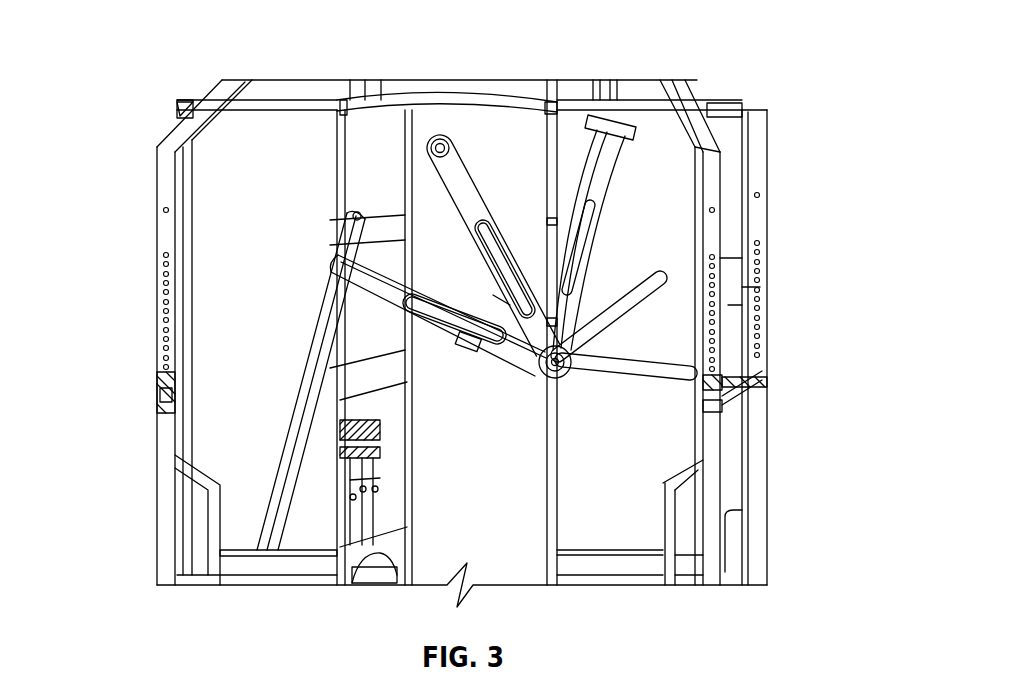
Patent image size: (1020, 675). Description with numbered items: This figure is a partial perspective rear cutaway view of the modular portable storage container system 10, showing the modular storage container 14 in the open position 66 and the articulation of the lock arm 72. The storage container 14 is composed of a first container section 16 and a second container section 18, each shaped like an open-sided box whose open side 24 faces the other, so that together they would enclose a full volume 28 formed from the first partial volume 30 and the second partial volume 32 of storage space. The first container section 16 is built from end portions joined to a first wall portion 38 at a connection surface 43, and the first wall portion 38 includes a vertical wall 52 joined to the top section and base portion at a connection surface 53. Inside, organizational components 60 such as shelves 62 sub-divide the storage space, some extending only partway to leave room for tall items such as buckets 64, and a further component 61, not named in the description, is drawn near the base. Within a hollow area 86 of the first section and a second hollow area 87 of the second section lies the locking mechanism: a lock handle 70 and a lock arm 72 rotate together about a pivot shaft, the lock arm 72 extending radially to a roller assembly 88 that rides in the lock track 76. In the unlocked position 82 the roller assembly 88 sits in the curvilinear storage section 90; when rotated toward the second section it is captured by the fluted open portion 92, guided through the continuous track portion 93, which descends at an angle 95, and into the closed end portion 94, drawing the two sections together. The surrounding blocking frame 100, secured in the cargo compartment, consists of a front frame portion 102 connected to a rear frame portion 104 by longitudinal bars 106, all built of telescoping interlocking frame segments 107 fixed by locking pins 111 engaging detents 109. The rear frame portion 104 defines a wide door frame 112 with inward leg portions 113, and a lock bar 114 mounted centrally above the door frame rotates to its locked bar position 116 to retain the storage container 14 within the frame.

The modular portable storage container system 10 is at (830, 180).
The modular storage container 14 is at (753, 180).
The first container section 16 is at (722, 480).
The second container section 18 is at (226, 316).
The open side 24 is at (430, 88).
The full volume 28 is at (545, 448).
The first partial volume 30 is at (430, 88).
The second partial volume 32 is at (430, 88).
The first wall portion 38 is at (809, 269).
The connection surface 43 is at (454, 97).
The vertical wall 52 is at (760, 287).
The connection surface 53 is at (176, 106).
The organizational components 60 is at (397, 297).
The lower bracket 61 is at (375, 585).
The shelves 62 is at (345, 220).
The buckets 64 is at (373, 550).
The open position 66 is at (808, 313).
The lock handle 70 is at (563, 237).
The lock arm 72 is at (470, 207).
The lock track 76 is at (480, 288).
The unlocked position 82 is at (617, 160).
The hollow area 86 is at (578, 388).
The second hollow area 87 is at (158, 448).
The roller assembly 88 is at (446, 143).
The curvilinear storage section 90 is at (480, 288).
The fluted open portion 92 is at (480, 288).
The continuous track portion 93 is at (480, 288).
The closed end portion 94 is at (323, 270).
The angle 95 is at (320, 452).
The blocking frame 100 is at (772, 557).
The front frame portion 102 is at (773, 227).
The rear frame portion 104 is at (162, 226).
The longitudinal bars 106 is at (757, 382).
The interlocking frame segments 107 is at (168, 145).
The detents 109 is at (163, 292).
The locking pins 111 is at (157, 386).
The wide door frame 112 is at (165, 570).
The leg portions 113 is at (180, 553).
The lock bar 114 is at (430, 88).
The locked bar position 116 is at (343, 88).